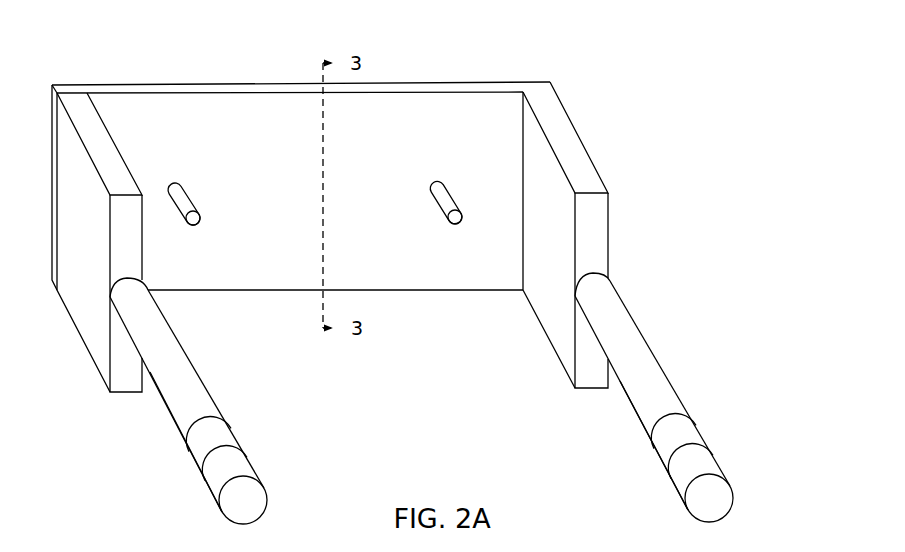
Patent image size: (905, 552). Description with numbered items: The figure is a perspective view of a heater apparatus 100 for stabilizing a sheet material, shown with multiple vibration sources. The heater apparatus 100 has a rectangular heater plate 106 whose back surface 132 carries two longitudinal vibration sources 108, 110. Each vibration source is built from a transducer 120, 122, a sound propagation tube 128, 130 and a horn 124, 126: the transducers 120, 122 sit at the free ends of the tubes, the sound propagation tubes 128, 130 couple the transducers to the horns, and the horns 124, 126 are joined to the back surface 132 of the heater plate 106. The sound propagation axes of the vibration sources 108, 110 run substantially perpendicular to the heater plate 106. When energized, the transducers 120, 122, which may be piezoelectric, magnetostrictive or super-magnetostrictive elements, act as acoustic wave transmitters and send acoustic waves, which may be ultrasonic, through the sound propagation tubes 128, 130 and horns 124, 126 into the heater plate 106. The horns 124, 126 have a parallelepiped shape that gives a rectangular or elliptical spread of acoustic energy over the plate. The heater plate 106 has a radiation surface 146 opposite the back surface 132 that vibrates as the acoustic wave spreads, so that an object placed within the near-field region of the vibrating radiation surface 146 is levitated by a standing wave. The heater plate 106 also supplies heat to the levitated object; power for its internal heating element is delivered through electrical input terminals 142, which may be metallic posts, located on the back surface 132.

The heater apparatus 100 is at (502, 74).
The heater plate 106 is at (275, 90).
The longitudinal vibration source 108 is at (153, 383).
The longitudinal vibration source 110 is at (629, 397).
The transducer 120 is at (242, 467).
The transducer 122 is at (705, 460).
The horn 124 is at (79, 107).
The horn 126 is at (558, 115).
The sound propagation tube 128 is at (183, 373).
The sound propagation tube 130 is at (640, 355).
The back surface 132 is at (383, 105).
The electrical input terminals 142 is at (187, 202).
The radiation surface 146 is at (185, 83).